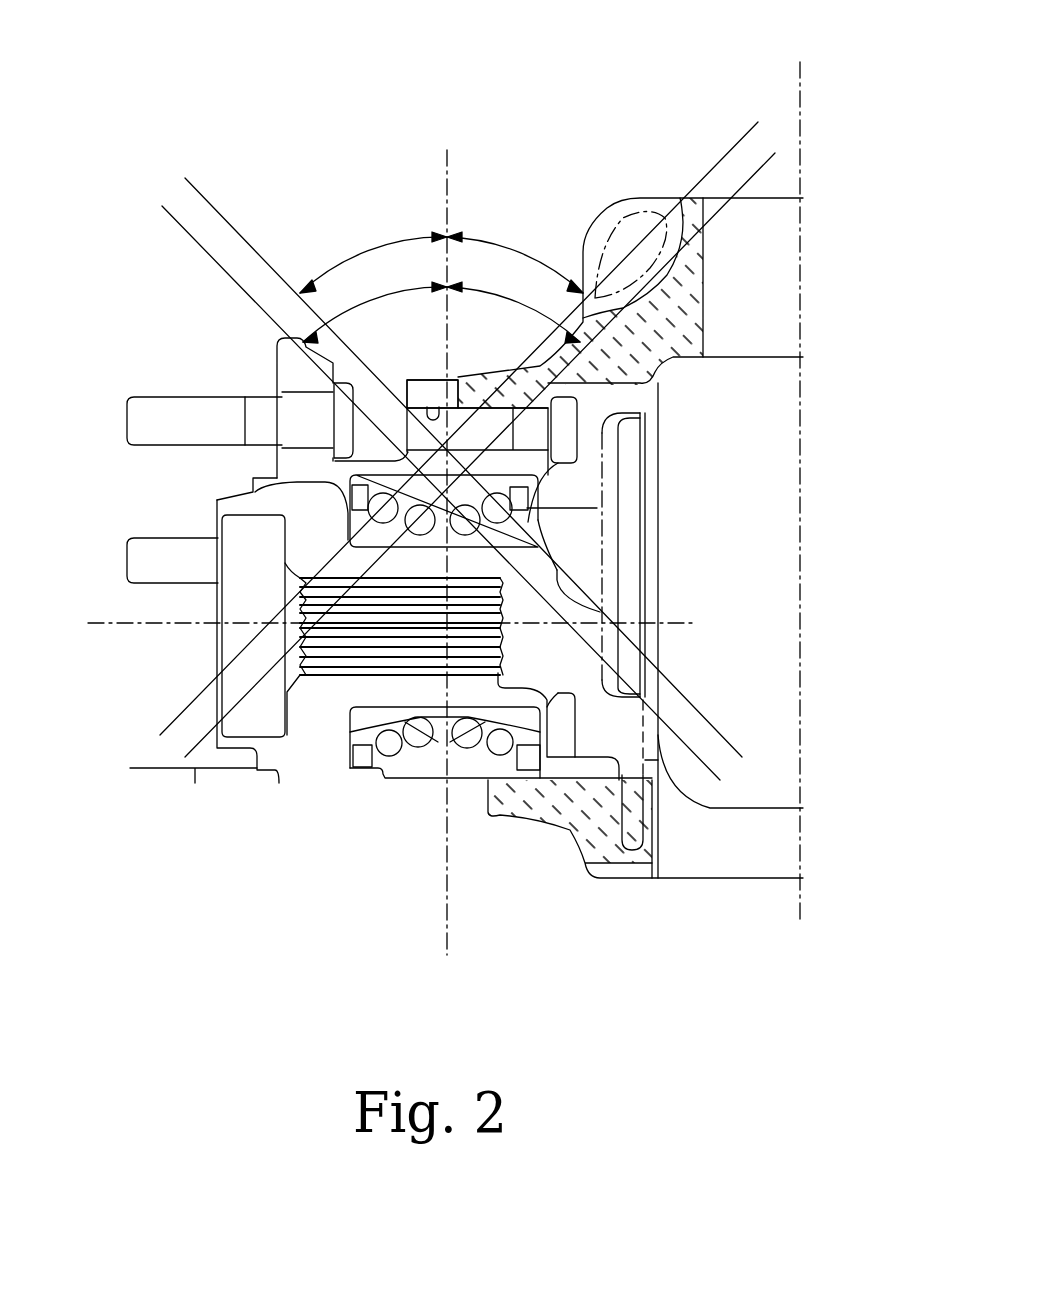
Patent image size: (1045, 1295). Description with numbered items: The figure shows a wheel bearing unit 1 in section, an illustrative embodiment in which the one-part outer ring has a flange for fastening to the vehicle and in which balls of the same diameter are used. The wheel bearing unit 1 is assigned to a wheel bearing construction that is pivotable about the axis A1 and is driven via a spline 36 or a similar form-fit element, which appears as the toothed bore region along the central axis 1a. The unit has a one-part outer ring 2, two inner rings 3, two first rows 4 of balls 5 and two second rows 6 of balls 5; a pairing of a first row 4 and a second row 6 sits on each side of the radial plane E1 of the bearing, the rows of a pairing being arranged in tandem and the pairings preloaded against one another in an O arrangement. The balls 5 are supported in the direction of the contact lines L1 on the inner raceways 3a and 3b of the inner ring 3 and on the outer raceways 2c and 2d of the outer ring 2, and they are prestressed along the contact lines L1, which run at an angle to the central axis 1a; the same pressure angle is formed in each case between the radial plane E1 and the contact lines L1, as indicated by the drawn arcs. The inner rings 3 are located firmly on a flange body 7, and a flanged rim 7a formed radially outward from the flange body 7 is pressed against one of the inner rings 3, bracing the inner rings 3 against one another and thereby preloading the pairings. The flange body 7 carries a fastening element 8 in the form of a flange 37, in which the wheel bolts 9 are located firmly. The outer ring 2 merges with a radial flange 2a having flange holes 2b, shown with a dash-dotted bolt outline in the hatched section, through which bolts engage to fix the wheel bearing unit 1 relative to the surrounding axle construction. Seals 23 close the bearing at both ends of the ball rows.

The wheel bearing unit 1 is at (527, 81).
The central axis 1a is at (148, 622).
The outer ring 2 is at (330, 461).
The radial flange 2a is at (413, 390).
The flange holes 2b is at (443, 407).
The outer raceway 2c is at (528, 507).
The outer raceway 2d is at (533, 503).
The inner ring 3 is at (348, 527).
The inner raceway 3a is at (658, 660).
The inner raceway 3b is at (565, 600).
The first row of balls 4 is at (440, 757).
The balls 5 is at (444, 736).
The second row of balls 6 is at (362, 732).
The flange body 7 is at (325, 715).
The flanged rim 7a is at (547, 715).
The fastening element 8 is at (282, 363).
The wheel bolts 9 is at (157, 388).
The seal 23 is at (330, 487).
The spline 36 is at (303, 613).
The flange 37 is at (247, 489).
The axis A1 is at (806, 107).
The radial plane E1 is at (449, 188).
The contact lines L1 is at (178, 222).